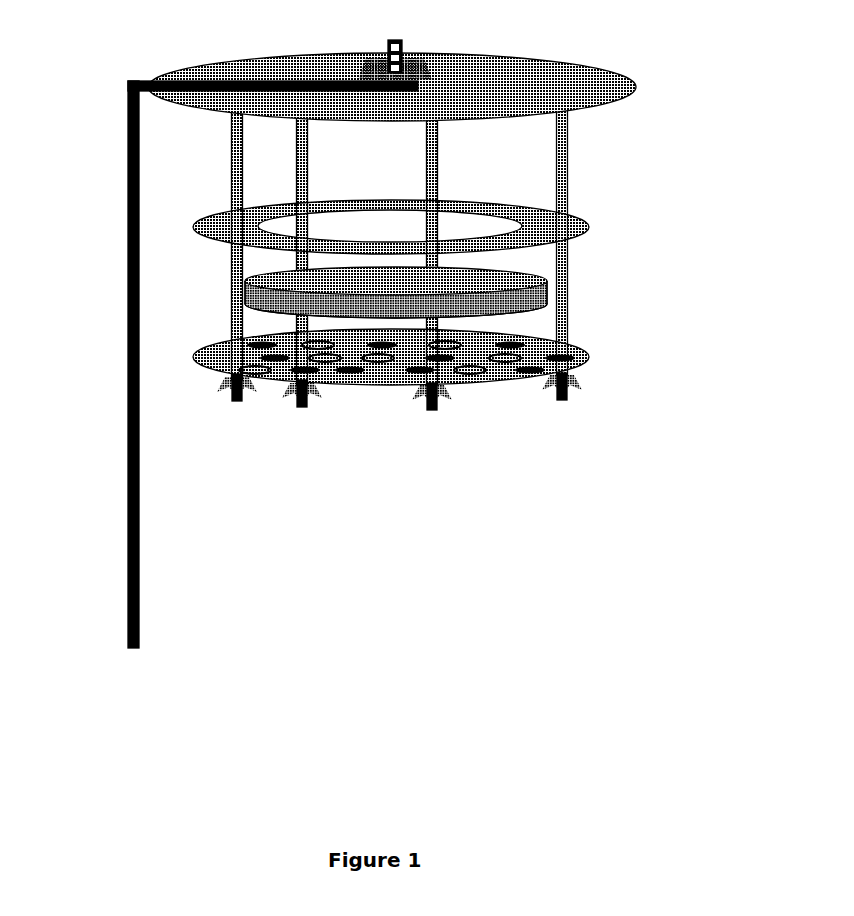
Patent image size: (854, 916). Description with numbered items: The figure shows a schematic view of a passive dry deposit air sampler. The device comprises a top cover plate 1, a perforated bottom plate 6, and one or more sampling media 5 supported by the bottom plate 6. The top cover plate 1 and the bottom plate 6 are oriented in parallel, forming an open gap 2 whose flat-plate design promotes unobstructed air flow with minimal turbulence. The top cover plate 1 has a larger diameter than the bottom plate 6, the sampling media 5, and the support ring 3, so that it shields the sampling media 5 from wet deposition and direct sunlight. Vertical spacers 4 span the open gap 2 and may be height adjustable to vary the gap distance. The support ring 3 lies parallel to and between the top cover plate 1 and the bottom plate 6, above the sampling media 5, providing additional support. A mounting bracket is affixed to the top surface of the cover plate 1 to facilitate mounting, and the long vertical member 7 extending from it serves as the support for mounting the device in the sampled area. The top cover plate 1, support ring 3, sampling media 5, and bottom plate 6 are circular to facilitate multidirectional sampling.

The top cover plate 1 is at (598, 90).
The open gap 2 is at (610, 158).
The support ring 3 is at (575, 215).
The vertical spacers 4 is at (570, 292).
The sampling media 5 is at (272, 293).
The perforated bottom plate 6 is at (588, 352).
The support pole 7 is at (127, 337).